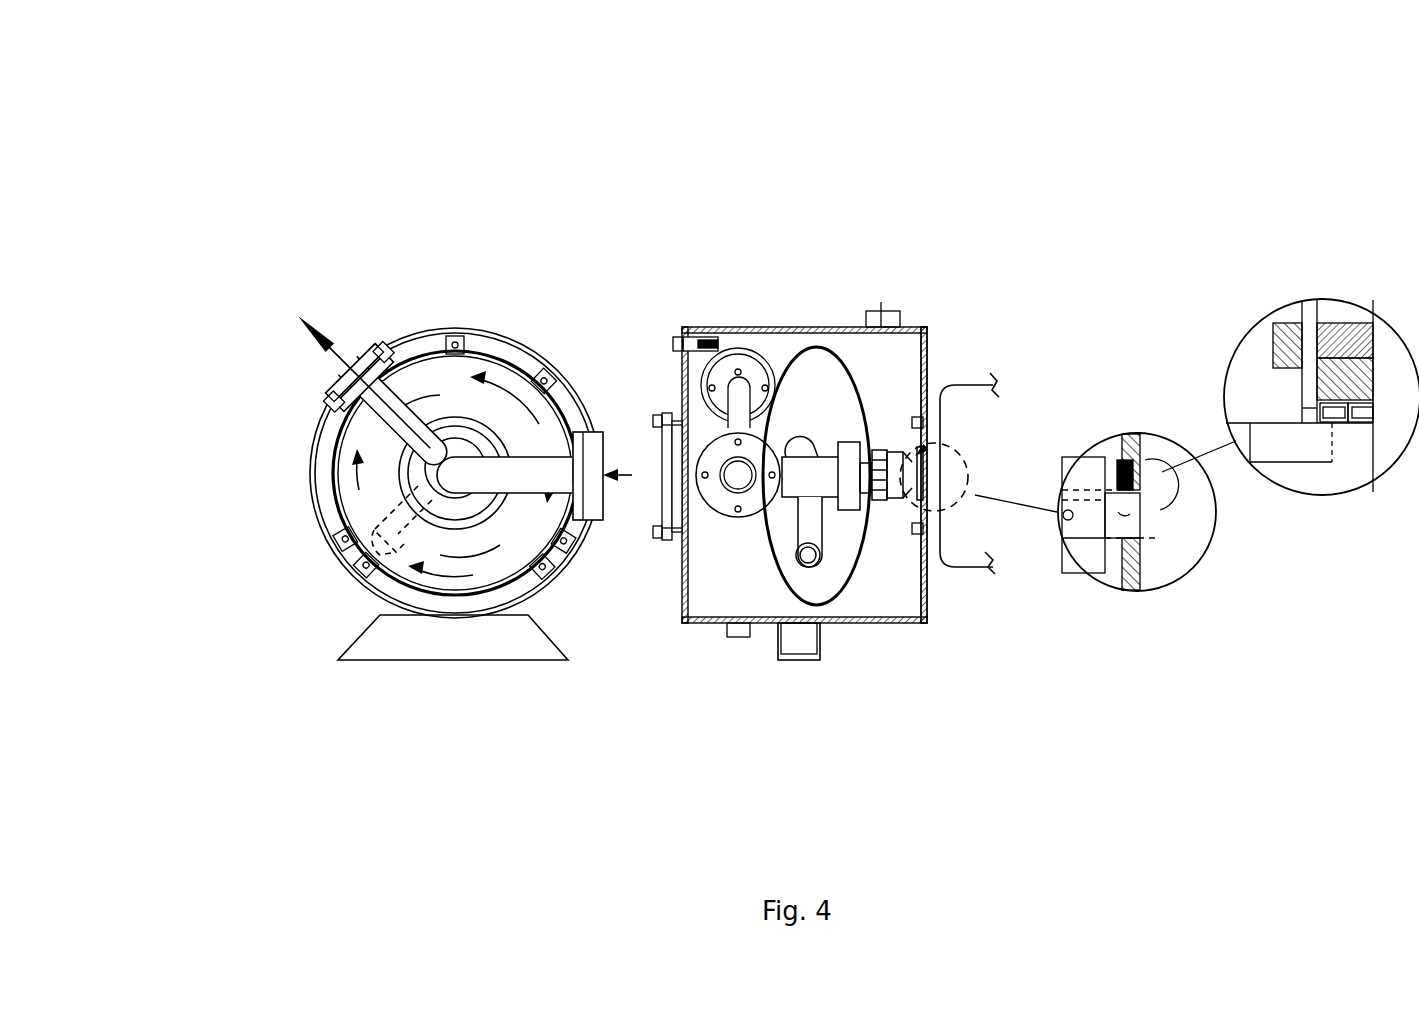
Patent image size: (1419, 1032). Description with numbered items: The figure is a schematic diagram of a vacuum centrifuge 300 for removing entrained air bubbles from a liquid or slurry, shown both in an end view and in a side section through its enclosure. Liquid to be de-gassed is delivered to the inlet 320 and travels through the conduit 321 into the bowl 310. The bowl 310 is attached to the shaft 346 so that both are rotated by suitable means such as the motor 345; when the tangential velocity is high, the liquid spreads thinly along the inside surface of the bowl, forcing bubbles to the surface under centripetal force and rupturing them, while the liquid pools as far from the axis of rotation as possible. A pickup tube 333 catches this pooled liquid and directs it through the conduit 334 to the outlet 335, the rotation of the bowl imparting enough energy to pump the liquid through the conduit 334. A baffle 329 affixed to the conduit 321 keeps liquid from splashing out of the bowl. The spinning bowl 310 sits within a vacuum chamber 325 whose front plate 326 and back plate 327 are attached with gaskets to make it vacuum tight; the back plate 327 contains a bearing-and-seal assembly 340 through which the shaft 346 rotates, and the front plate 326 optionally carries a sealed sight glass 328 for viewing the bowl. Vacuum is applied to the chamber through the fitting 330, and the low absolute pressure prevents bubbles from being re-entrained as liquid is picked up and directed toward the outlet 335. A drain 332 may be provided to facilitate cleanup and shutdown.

The vacuum centrifuge 300 is at (866, 170).
The bowl 310 is at (867, 413).
The inlet 320 is at (708, 437).
The conduit 321 is at (460, 437).
The vacuum chamber 325 is at (315, 427).
The front plate 326 is at (683, 324).
The back plate 327 is at (927, 570).
The sight glass 328 is at (653, 457).
The baffle 329 is at (437, 420).
The fitting 330 is at (898, 312).
The drain 332 is at (740, 637).
The pickup tube 333 is at (393, 553).
The conduit 334 is at (797, 517).
The outlet 335 is at (333, 370).
The bearing-and-seal assembly 340 is at (1237, 342).
The motor 345 is at (973, 568).
The shaft 346 is at (917, 455).